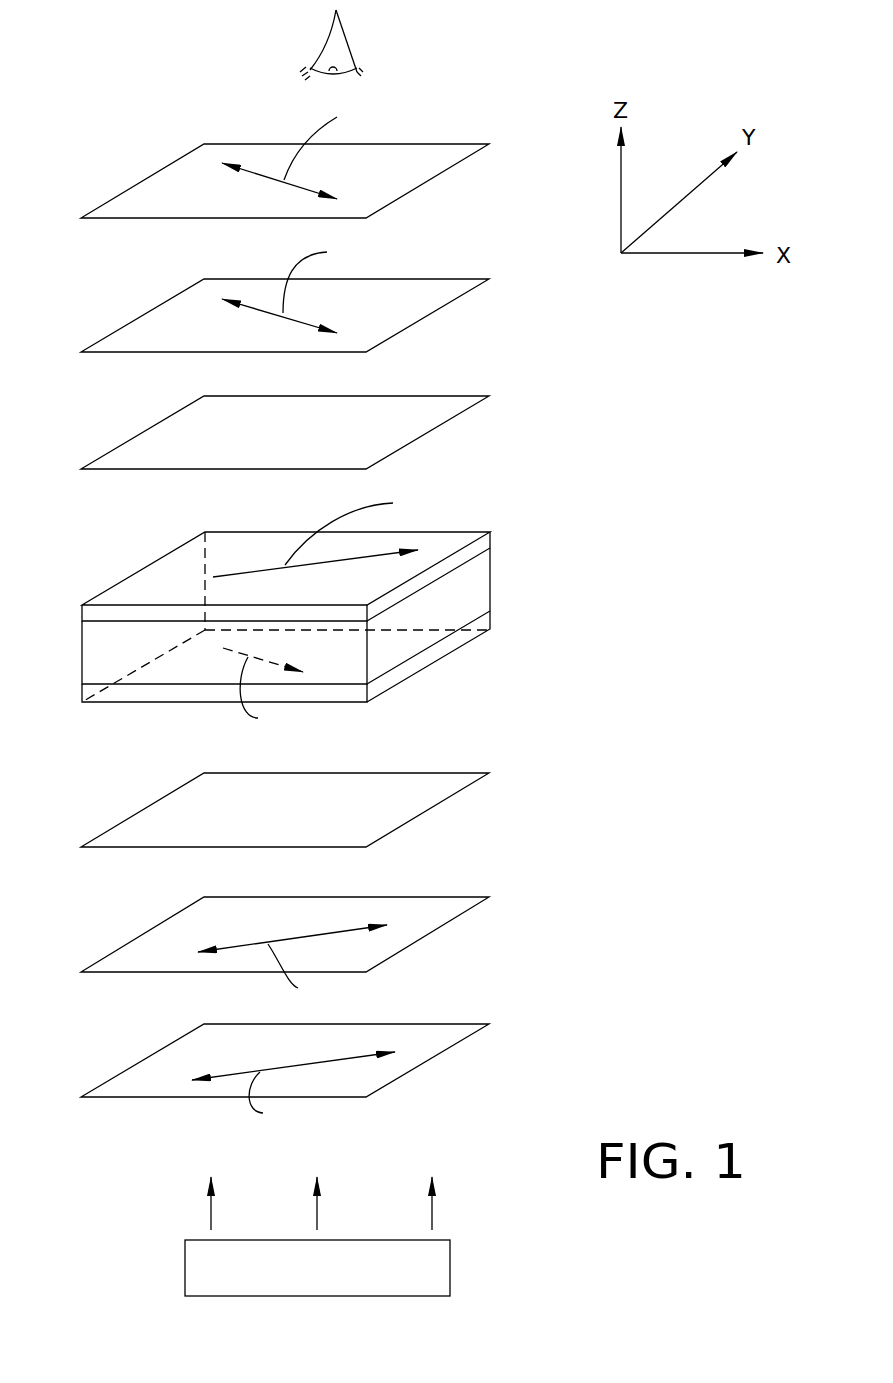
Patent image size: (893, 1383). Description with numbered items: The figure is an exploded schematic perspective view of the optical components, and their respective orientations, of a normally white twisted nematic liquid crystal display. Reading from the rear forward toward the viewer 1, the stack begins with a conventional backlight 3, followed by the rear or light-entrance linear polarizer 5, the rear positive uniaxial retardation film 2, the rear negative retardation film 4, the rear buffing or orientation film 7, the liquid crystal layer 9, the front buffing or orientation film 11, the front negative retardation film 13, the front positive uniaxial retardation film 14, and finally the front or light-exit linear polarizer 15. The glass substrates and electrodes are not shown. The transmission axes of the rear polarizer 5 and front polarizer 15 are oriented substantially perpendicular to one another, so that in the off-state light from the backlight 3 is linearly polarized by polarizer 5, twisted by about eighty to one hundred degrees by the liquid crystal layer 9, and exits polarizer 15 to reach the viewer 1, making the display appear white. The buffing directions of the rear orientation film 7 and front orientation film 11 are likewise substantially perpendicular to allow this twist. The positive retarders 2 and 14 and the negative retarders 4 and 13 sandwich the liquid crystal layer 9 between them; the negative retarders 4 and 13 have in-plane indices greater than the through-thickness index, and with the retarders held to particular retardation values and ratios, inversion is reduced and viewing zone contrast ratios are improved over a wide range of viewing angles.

The viewer 1 is at (337, 53).
The front linear polarizer 15 is at (177, 181).
The front positive uniaxial retardation film 14 is at (408, 307).
The front negative retardation film 13 is at (195, 442).
The front orientation film 11 is at (463, 558).
The liquid crystal layer 9 is at (454, 603).
The rear orientation film 7 is at (350, 692).
The rear negative retardation film 4 is at (413, 800).
The rear positive uniaxial retardation film 2 is at (403, 933).
The rear linear polarizer 5 is at (393, 1070).
The backlight 3 is at (440, 1264).